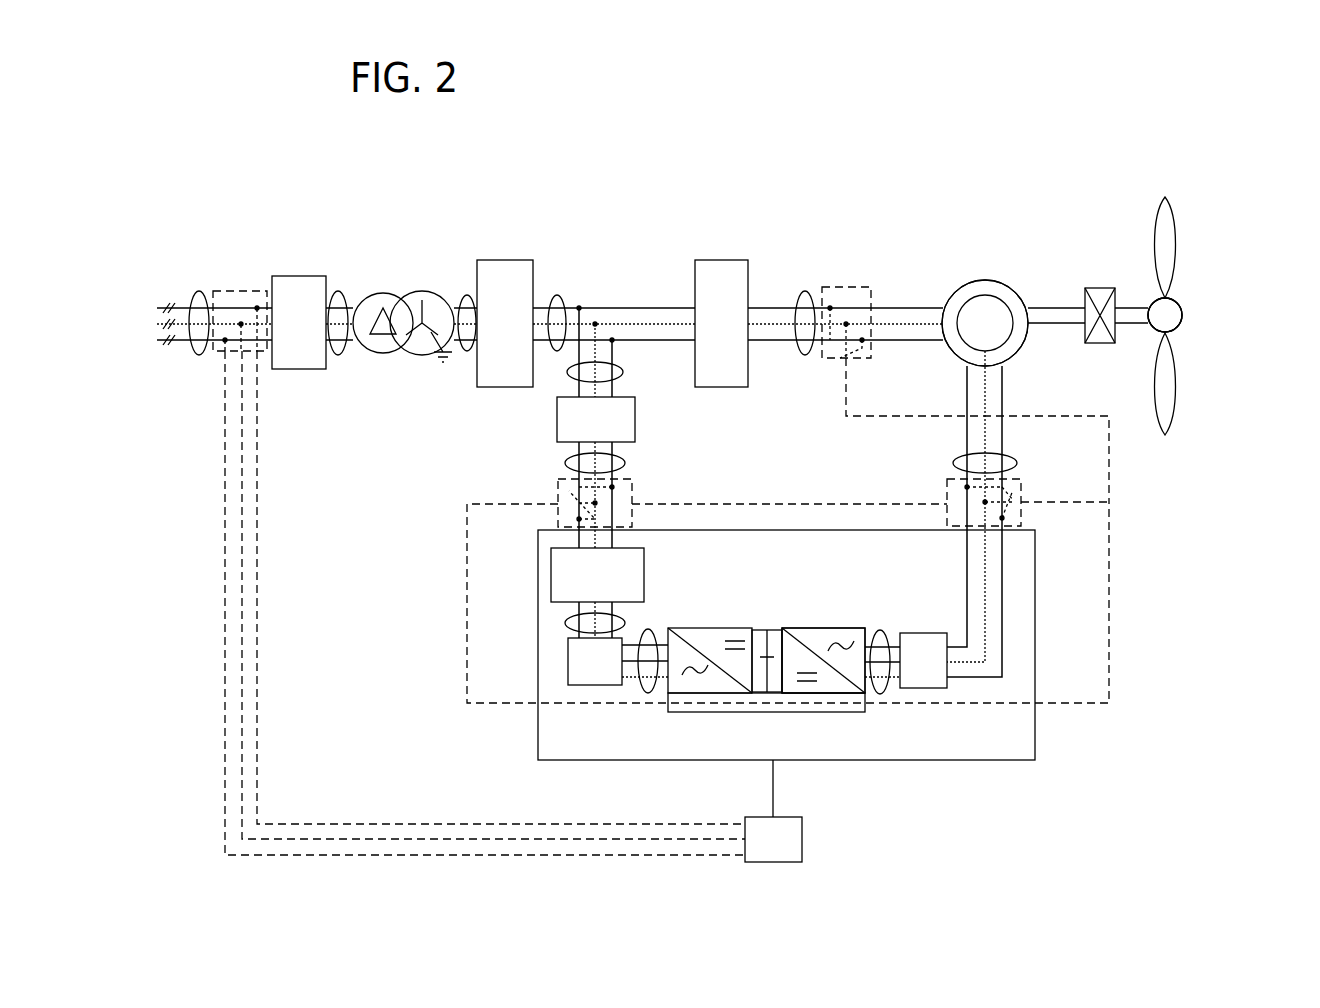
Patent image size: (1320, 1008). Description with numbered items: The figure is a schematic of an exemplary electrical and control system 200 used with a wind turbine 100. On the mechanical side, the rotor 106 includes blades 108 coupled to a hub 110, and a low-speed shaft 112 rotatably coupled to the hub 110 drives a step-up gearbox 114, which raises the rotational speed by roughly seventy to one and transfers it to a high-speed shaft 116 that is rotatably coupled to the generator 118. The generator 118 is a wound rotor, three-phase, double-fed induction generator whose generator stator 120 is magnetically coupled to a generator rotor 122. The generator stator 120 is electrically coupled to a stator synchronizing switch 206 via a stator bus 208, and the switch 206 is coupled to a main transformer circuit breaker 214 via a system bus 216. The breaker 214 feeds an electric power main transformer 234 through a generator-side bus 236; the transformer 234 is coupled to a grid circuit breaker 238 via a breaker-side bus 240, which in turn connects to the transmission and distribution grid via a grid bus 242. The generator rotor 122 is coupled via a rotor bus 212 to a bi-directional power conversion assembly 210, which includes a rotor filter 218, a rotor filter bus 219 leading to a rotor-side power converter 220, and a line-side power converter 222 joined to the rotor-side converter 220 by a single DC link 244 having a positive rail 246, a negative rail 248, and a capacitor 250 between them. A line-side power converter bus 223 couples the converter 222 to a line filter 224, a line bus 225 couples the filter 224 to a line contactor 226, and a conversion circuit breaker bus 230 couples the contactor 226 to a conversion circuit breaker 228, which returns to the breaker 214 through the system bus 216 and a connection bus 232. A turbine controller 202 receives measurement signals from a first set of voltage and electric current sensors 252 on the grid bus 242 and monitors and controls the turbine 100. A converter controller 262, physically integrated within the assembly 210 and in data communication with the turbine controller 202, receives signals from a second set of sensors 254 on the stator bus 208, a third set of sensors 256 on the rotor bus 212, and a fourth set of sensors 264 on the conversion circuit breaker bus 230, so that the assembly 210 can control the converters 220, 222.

The wind turbine 100 is at (1153, 180).
The rotor 106 is at (1192, 294).
The blades 108 is at (1179, 255).
The hub 110 is at (1183, 315).
The low-speed shaft 112 is at (1131, 308).
The step-up gearbox 114 is at (1098, 288).
The high-speed shaft 116 is at (1055, 308).
The generator 118 is at (985, 262).
The generator stator 120 is at (980, 284).
The generator rotor 122 is at (978, 302).
The electrical and control system 200 is at (245, 163).
The turbine controller 202 is at (773, 839).
The stator synchronizing switch 206 is at (722, 260).
The stator bus 208 is at (805, 291).
The power conversion assembly 210 is at (1109, 640).
The rotor bus 212 is at (1017, 463).
The main transformer circuit breaker 214 is at (505, 260).
The system bus 216 is at (557, 293).
The rotor filter 218 is at (925, 640).
The rotor filter bus 219 is at (880, 630).
The rotor-side power converter 220 is at (875, 695).
The line-side power converter 222 is at (665, 694).
The line-side power converter bus 223 is at (648, 630).
The line filter 224 is at (568, 660).
The line bus 225 is at (565, 623).
The line contactor 226 is at (551, 575).
The conversion circuit breaker 228 is at (635, 420).
The conversion circuit breaker bus 230 is at (625, 463).
The connection bus 232 is at (625, 374).
The main transformer 234 is at (422, 291).
The generator-side bus 236 is at (467, 290).
The grid circuit breaker 238 is at (290, 276).
The breaker-side bus 240 is at (338, 291).
The grid bus 242 is at (199, 291).
The DC link 244 is at (748, 592).
The positive rail 246 is at (783, 640).
The negative rail 248 is at (775, 694).
The capacitor 250 is at (764, 650).
The first set of voltage and electric current sensors 252 is at (215, 368).
The second set of voltage and electric current sensors 254 is at (862, 286).
The third set of voltage and electric current sensors 256 is at (940, 500).
The converter controller 262 is at (826, 704).
The fourth set of voltage and electric current sensors 264 is at (632, 503).